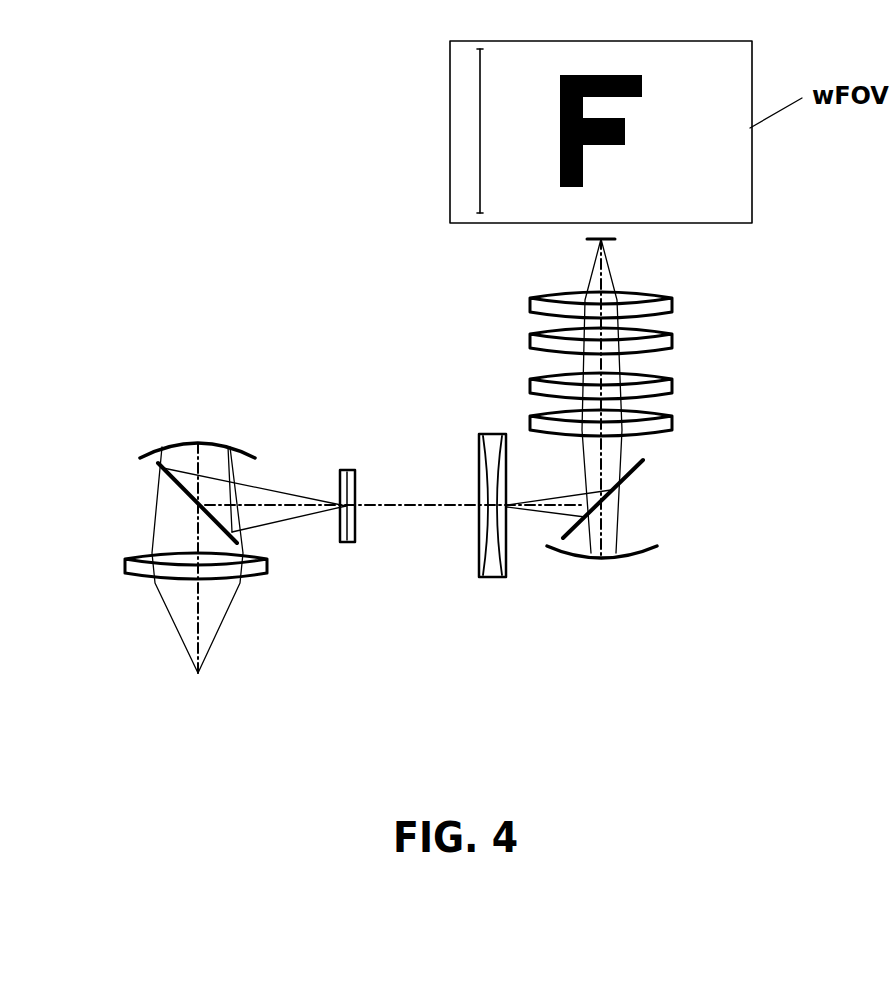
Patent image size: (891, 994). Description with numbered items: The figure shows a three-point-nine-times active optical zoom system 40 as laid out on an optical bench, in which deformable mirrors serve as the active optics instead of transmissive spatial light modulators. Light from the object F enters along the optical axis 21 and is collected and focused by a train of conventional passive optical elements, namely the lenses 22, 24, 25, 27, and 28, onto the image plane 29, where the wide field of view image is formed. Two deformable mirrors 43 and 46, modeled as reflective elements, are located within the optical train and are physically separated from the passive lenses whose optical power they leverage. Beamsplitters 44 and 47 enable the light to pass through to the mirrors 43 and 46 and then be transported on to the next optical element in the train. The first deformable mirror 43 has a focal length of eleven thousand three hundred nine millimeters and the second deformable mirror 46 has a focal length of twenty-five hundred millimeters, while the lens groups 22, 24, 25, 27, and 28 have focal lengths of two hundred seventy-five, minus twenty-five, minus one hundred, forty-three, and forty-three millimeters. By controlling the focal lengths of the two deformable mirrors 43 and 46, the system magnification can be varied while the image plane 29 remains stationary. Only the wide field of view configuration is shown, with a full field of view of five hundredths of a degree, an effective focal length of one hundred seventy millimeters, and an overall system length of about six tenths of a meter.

The optical system 40 is at (172, 222).
The optical axis 21 is at (198, 607).
The passive optical element 22 is at (125, 565).
The passive optical element 24 is at (346, 542).
The passive optical element 25 is at (492, 577).
The passive optical element 27 is at (681, 373).
The passive optical element 28 is at (681, 293).
The image plane 29 is at (617, 239).
The first deformable mirror 43 is at (143, 450).
The beamsplitter 44 is at (173, 487).
The second deformable mirror 46 is at (650, 558).
The beamsplitter 47 is at (633, 475).